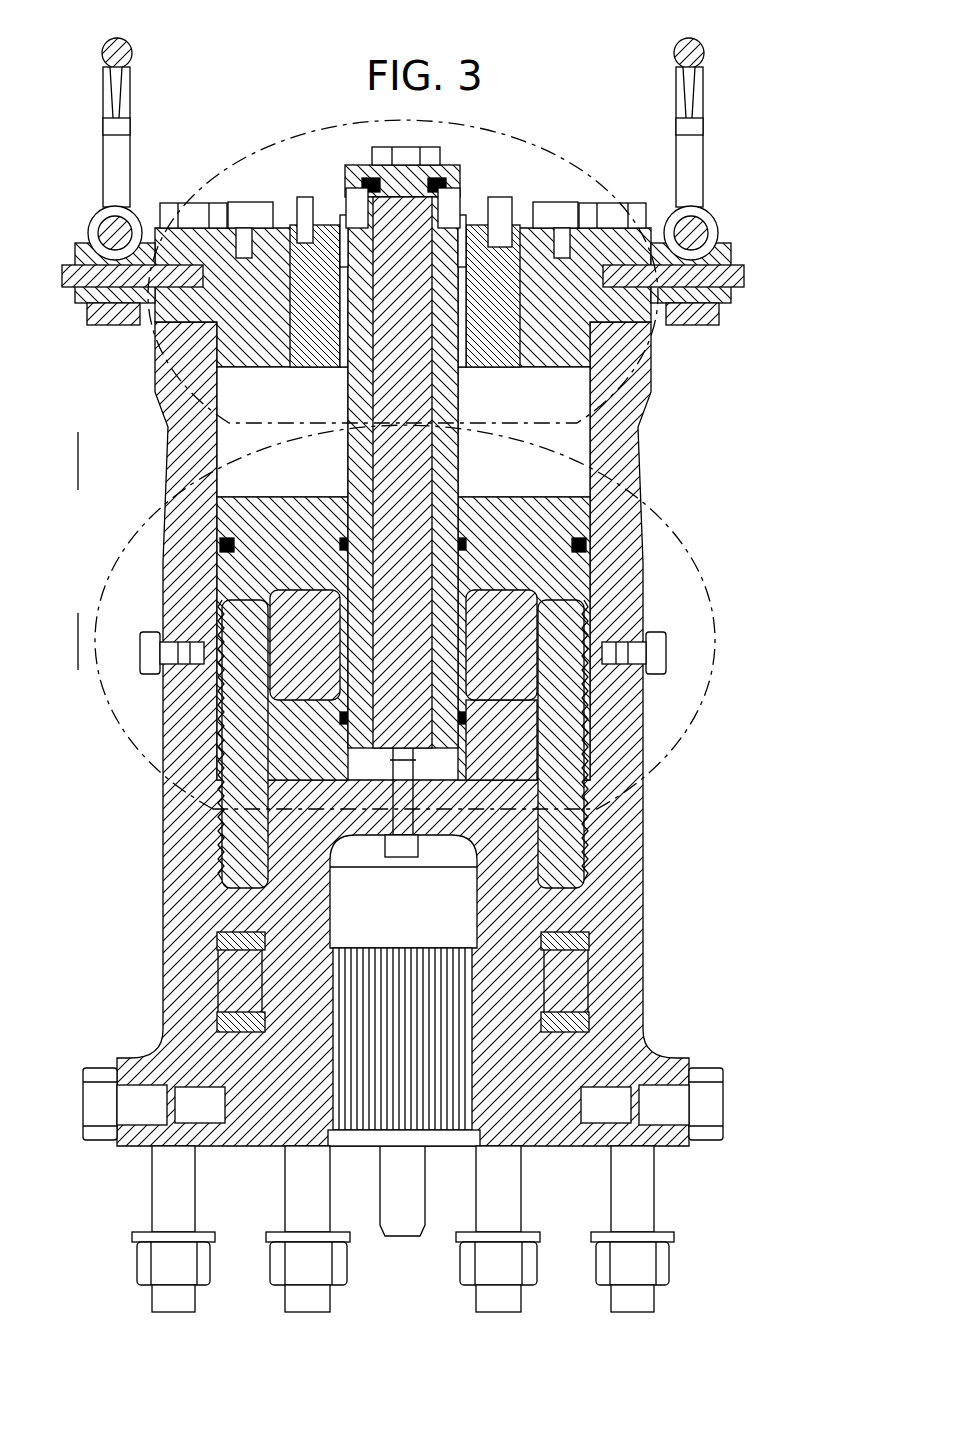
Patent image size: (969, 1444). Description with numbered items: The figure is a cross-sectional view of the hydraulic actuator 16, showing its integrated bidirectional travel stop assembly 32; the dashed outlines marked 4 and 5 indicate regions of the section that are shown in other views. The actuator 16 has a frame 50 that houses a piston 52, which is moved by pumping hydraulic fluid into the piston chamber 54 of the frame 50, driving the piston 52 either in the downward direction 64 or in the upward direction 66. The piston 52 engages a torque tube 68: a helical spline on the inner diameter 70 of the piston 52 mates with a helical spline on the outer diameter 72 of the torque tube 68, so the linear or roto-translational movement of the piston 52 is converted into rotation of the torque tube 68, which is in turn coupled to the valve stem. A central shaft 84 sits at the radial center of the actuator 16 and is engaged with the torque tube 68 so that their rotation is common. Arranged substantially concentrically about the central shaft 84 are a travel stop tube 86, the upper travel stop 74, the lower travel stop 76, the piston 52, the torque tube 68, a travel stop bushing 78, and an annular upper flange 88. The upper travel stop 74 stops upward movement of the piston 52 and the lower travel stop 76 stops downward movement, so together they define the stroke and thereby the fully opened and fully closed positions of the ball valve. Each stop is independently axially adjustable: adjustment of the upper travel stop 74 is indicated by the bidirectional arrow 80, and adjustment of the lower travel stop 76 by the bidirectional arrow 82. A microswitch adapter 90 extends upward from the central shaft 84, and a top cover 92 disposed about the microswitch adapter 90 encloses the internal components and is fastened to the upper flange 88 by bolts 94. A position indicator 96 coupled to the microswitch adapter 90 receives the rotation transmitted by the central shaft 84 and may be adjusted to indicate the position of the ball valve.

The actuator 16 is at (750, 42).
The integrated bidirectional travel stop assembly 32 is at (538, 97).
The section line 4 is at (235, 235).
The section line 5 is at (215, 462).
The frame 50 is at (622, 440).
The piston 52 is at (562, 578).
The piston chamber 54 is at (560, 392).
The downward direction 64 is at (78, 670).
The upward direction 66 is at (78, 432).
The torque tube 68 is at (526, 992).
The inner diameter of the piston 70 is at (512, 745).
The outer diameter of the torque tube 72 is at (540, 703).
The upper travel stop 74 is at (263, 345).
The lower travel stop 76 is at (330, 652).
The travel stop bushing 78 is at (527, 228).
The bidirectional arrow 80 is at (492, 340).
The bidirectional arrow 82 is at (481, 636).
The central shaft 84 is at (410, 405).
The travel stop tube 86 is at (446, 490).
The upper flange 88 is at (222, 245).
The microswitch adapter 90 is at (405, 186).
The top cover 92 is at (452, 192).
The bolts 94 is at (250, 200).
The position indicator 96 is at (420, 148).